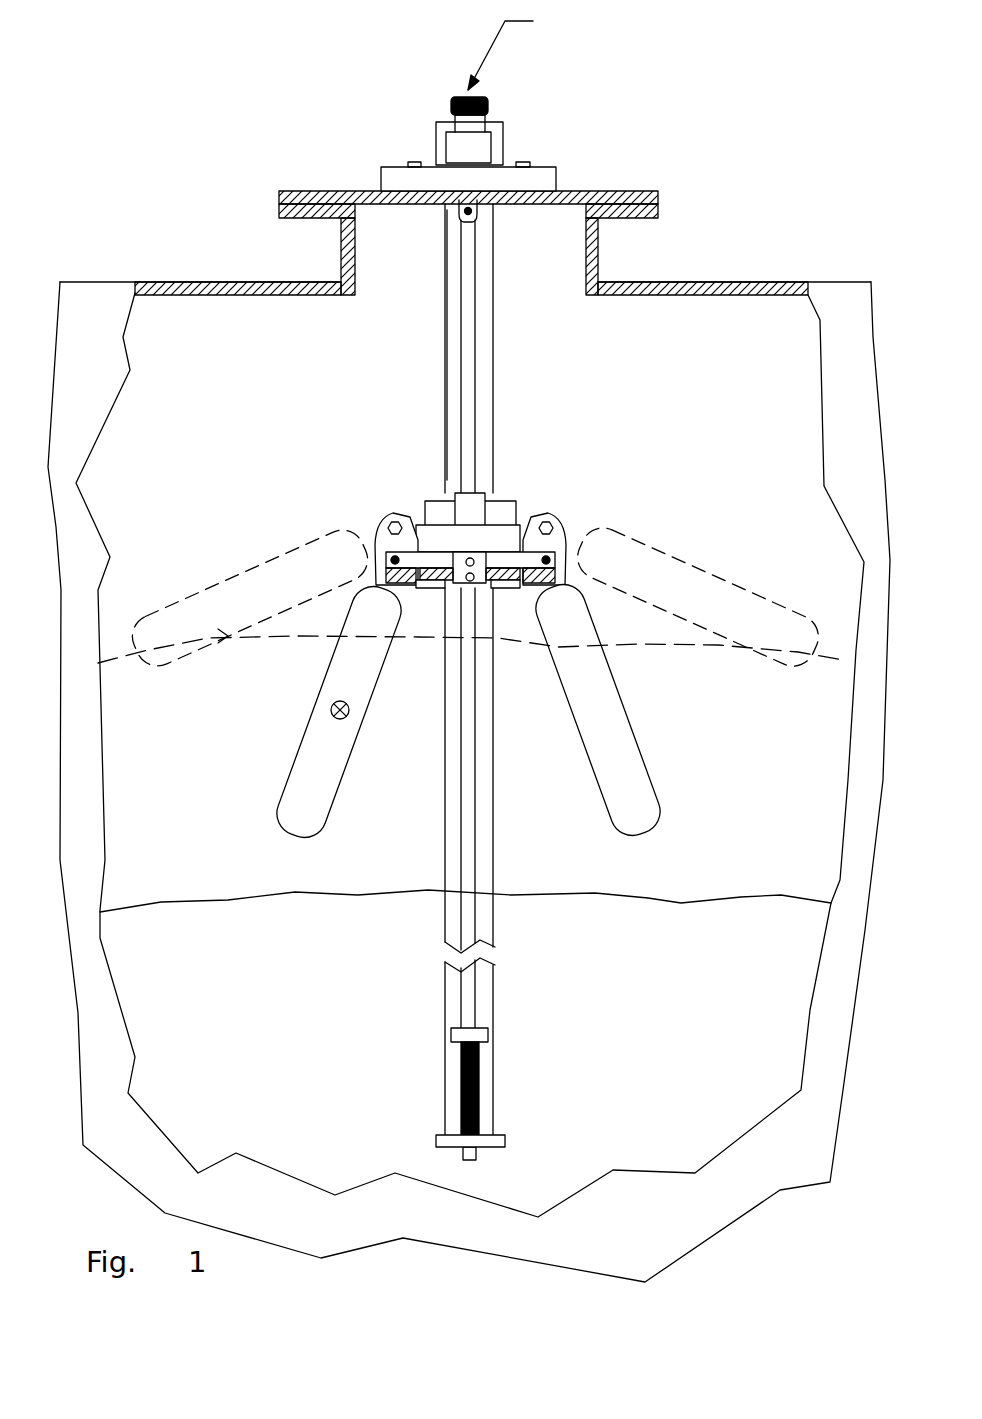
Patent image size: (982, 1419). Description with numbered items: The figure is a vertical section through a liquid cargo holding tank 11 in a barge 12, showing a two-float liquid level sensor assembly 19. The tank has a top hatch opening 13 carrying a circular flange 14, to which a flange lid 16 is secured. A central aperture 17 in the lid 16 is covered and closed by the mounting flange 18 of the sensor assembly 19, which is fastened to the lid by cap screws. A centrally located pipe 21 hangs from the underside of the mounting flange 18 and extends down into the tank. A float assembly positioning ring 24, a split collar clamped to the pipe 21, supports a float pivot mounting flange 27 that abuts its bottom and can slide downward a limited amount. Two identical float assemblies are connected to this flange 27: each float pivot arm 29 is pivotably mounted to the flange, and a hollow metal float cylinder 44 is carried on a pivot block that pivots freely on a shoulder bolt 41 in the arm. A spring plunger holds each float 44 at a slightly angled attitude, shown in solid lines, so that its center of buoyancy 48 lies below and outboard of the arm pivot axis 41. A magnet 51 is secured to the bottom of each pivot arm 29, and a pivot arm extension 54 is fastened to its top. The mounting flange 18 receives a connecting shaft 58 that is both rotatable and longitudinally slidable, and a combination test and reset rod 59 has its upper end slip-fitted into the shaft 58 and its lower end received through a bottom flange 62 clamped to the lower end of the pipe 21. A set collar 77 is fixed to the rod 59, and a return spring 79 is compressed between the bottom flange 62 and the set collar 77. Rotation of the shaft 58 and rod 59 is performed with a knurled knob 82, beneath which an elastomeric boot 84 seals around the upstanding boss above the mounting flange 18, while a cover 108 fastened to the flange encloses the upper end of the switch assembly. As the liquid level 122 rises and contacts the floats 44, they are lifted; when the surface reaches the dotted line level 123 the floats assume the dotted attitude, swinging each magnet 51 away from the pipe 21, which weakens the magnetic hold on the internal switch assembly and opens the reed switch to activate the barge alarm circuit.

The liquid cargo holding tank 11 is at (245, 450).
The barge 12 is at (853, 290).
The top hatch opening 13 is at (600, 257).
The circular flange 14 is at (648, 200).
The flange lid 16 is at (357, 193).
The central aperture 17 is at (505, 200).
The mounting flange 18 is at (533, 163).
The liquid level sensor assembly 19 is at (521, 49).
The pipe 21 is at (485, 397).
The float assembly positioning ring 24 is at (503, 508).
The float pivot mounting flange 27 is at (522, 535).
The float pivot arm 29 is at (370, 667).
The shoulder bolt 41 is at (433, 577).
The hollow metal float cylinder 44 is at (307, 802).
The center of buoyancy 48 is at (337, 713).
The magnet 51 is at (433, 590).
The pivot arm extension 54 is at (440, 563).
The connecting shaft 58 is at (462, 208).
The combination test and reset rod 59 is at (472, 312).
The bottom flange 62 is at (503, 1138).
The set collar 77 is at (458, 1033).
The return spring 79 is at (463, 1078).
The knurled knob 82 is at (462, 98).
The elastomeric boot 84 is at (453, 128).
The cover 108 is at (493, 133).
The liquid level 122 is at (682, 903).
The dotted line liquid level 123 is at (648, 637).